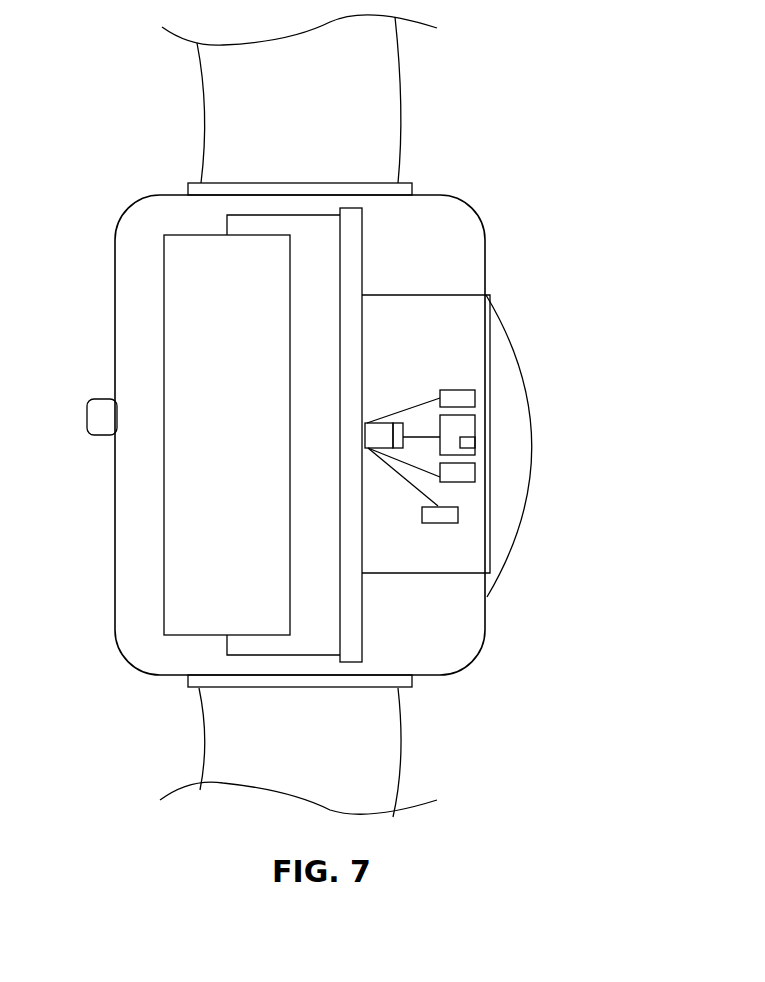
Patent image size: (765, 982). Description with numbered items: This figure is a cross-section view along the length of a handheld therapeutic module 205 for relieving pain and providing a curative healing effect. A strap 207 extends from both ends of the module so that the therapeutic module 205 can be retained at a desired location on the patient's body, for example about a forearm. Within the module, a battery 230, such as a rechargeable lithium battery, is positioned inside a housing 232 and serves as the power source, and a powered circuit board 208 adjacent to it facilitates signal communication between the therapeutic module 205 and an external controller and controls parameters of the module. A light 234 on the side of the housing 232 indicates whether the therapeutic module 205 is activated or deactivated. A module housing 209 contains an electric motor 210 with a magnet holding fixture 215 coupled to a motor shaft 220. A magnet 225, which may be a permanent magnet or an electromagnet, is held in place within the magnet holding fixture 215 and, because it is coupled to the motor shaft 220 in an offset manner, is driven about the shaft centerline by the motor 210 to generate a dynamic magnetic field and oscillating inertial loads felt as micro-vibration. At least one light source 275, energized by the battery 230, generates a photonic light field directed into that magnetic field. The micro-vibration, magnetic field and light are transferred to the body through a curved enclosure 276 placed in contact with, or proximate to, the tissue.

The therapeutic module 205 is at (146, 172).
The strap 207 is at (387, 102).
The powered circuit board 208 is at (352, 613).
The module housing 209 is at (418, 295).
The electric motor 210 is at (373, 434).
The magnet holding fixture 215 is at (470, 430).
The motor shaft 220 is at (426, 434).
The magnet 225 is at (476, 443).
The battery 230 is at (180, 537).
The housing 232 is at (148, 655).
The light 234 is at (97, 422).
The light source 275 is at (470, 398).
The enclosure 276 is at (511, 327).